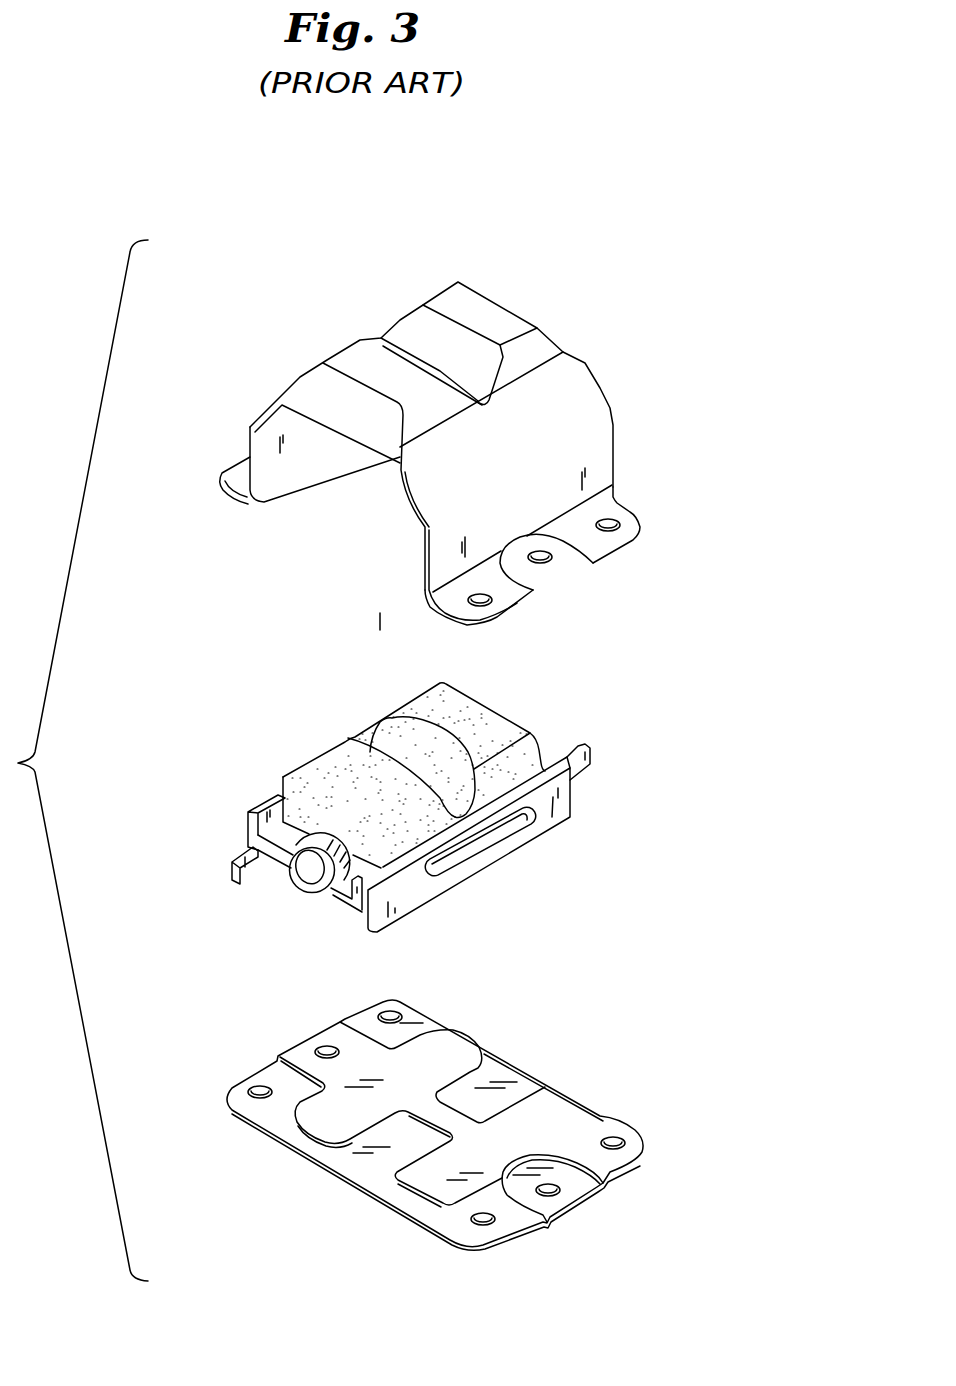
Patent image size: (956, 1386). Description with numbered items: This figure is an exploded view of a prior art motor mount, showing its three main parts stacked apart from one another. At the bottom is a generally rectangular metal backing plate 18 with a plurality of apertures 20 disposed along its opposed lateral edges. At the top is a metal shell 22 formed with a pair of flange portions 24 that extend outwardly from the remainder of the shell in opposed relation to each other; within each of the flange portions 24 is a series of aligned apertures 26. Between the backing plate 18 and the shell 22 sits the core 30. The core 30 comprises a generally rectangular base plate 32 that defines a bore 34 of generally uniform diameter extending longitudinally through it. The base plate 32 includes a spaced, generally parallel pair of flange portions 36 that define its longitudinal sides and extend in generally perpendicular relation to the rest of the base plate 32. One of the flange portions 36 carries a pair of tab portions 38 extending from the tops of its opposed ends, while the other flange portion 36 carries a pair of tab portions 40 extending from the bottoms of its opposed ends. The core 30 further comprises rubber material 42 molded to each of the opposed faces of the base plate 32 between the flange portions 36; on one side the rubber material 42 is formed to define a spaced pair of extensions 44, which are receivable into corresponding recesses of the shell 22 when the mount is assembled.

The backing plate 18 is at (443, 1119).
The apertures 20 is at (258, 1086).
The shell 22 is at (440, 432).
The flange portions 24 is at (222, 487).
The apertures 26 is at (551, 564).
The core 30 is at (416, 815).
The base plate 32 is at (264, 798).
The bore 34 is at (308, 873).
The flange portions 36 is at (253, 823).
The tab portions 38 is at (587, 750).
The tab portions 40 is at (233, 873).
The rubber material 42 is at (397, 760).
The extensions 44 is at (400, 732).